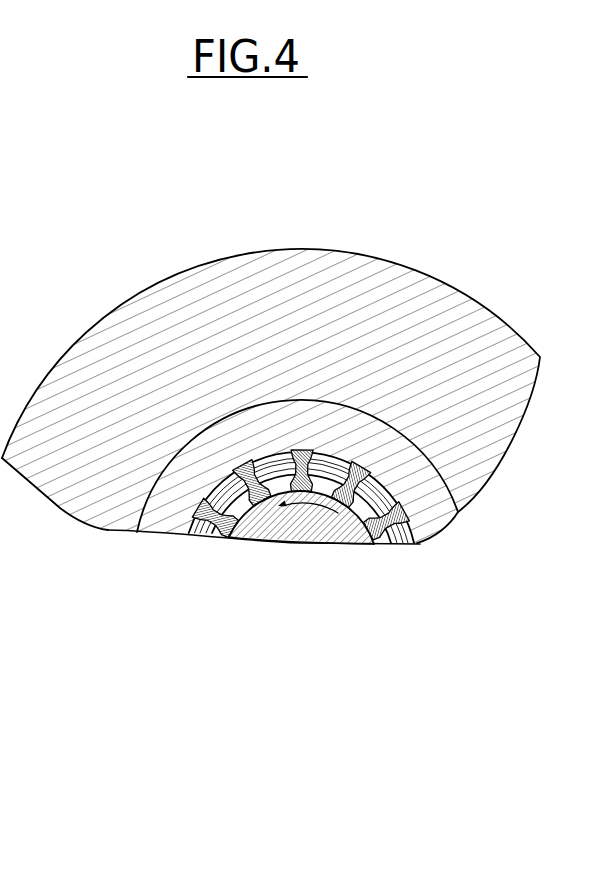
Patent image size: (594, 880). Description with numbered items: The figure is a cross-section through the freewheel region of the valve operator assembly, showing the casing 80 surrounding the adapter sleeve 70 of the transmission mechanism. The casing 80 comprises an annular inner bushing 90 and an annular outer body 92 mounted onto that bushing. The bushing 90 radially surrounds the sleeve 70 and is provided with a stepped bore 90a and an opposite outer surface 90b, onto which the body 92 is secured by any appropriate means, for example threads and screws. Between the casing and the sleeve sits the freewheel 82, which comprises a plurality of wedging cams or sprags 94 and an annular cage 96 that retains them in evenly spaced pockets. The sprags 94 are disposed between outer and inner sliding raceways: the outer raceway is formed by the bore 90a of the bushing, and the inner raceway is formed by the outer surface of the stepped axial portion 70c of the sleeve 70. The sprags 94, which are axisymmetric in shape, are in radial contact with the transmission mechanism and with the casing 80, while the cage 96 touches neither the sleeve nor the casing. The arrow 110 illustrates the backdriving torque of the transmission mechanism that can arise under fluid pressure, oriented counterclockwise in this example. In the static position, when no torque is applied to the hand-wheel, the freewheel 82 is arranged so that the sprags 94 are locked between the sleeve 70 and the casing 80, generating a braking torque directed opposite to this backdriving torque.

The adapter sleeve 70 is at (285, 545).
The stepped axial portion 70c is at (351, 545).
The casing 80 is at (340, 248).
The freewheel 82 is at (389, 498).
The annular inner bushing 90 is at (433, 476).
The stepped bore 90a is at (196, 528).
The outer surface 90b is at (140, 513).
The annular outer body 92 is at (87, 512).
The sprags 94 is at (236, 538).
The annular cage 96 is at (233, 486).
The arrow 110 is at (318, 507).